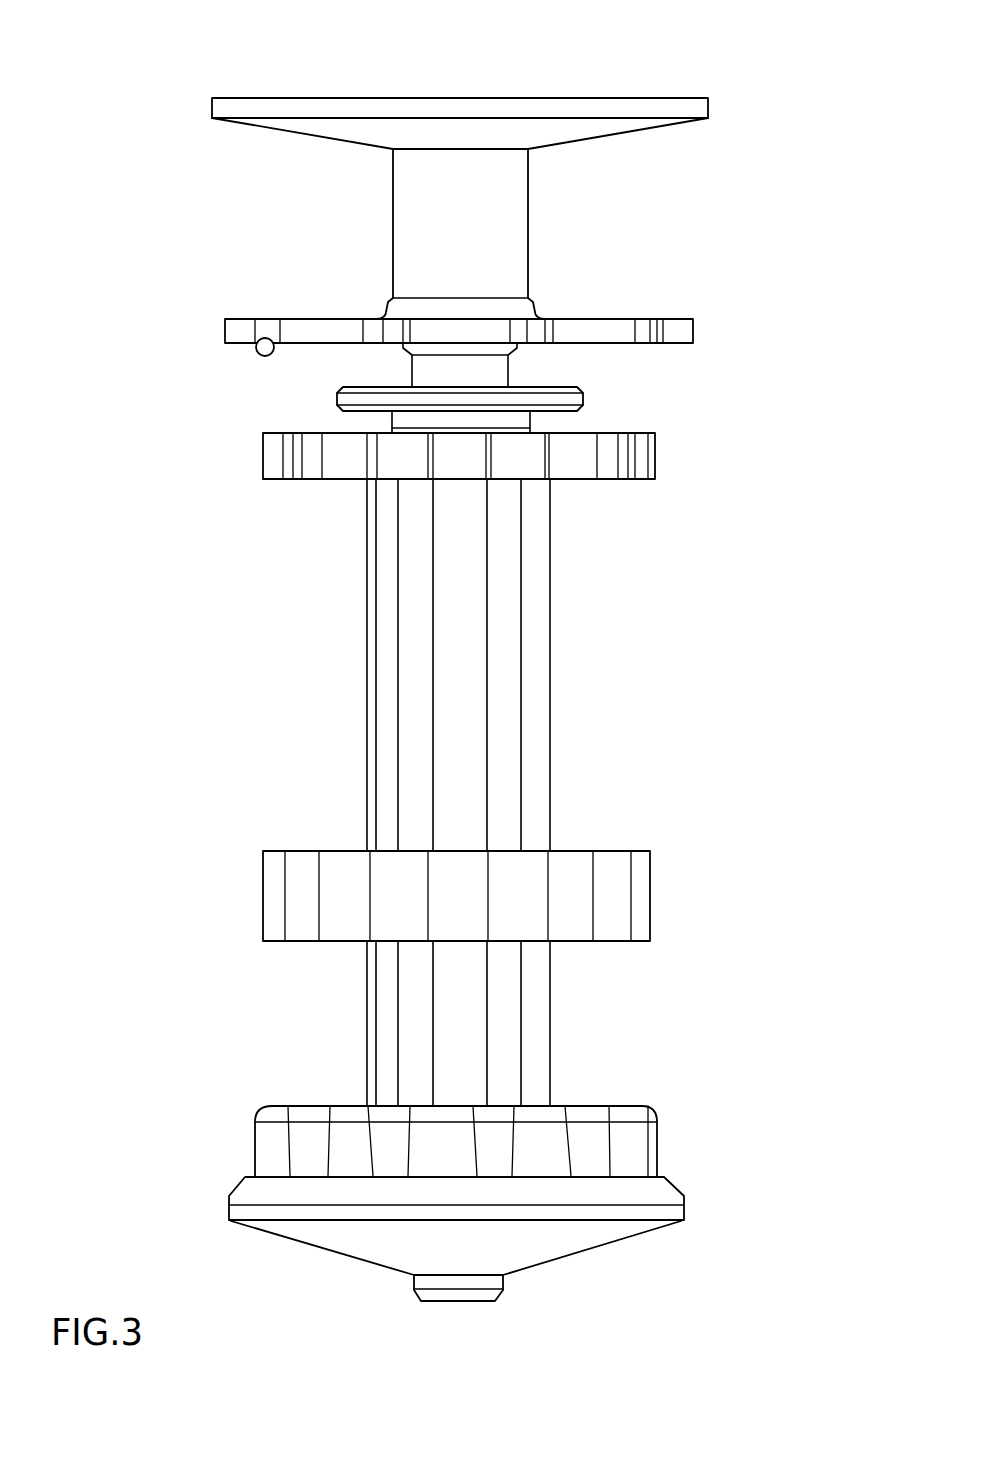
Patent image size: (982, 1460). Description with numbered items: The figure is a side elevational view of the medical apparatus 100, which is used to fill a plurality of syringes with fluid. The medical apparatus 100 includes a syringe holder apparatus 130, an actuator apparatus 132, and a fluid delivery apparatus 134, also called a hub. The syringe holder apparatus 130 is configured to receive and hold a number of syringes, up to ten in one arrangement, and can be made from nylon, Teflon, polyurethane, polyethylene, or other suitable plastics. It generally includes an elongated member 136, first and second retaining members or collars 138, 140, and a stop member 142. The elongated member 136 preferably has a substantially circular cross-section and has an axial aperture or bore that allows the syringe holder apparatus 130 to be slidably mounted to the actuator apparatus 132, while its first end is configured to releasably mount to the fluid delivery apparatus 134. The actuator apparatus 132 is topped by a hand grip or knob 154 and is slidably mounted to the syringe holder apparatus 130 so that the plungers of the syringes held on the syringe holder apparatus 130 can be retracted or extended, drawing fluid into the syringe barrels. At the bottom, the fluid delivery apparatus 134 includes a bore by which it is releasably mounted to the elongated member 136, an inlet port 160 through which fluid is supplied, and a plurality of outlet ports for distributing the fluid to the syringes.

The medical apparatus 100 is at (146, 950).
The syringe holder apparatus 130 is at (305, 693).
The actuator apparatus 132 is at (258, 225).
The fluid delivery apparatus 134 is at (200, 1169).
The elongated member 136 is at (550, 703).
The first retaining member 138 is at (650, 893).
The second retaining member 140 is at (655, 465).
The stop member 142 is at (583, 392).
The hand grip 154 is at (332, 105).
The inlet port 160 is at (455, 1303).